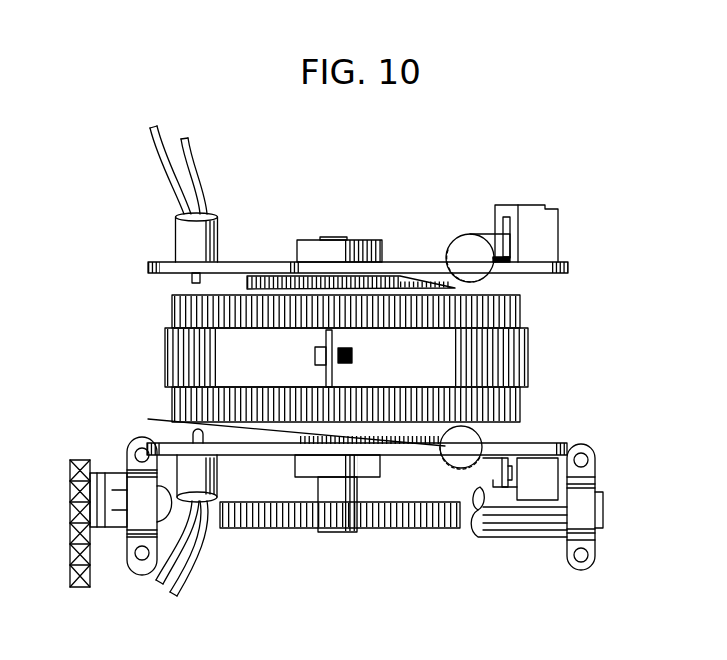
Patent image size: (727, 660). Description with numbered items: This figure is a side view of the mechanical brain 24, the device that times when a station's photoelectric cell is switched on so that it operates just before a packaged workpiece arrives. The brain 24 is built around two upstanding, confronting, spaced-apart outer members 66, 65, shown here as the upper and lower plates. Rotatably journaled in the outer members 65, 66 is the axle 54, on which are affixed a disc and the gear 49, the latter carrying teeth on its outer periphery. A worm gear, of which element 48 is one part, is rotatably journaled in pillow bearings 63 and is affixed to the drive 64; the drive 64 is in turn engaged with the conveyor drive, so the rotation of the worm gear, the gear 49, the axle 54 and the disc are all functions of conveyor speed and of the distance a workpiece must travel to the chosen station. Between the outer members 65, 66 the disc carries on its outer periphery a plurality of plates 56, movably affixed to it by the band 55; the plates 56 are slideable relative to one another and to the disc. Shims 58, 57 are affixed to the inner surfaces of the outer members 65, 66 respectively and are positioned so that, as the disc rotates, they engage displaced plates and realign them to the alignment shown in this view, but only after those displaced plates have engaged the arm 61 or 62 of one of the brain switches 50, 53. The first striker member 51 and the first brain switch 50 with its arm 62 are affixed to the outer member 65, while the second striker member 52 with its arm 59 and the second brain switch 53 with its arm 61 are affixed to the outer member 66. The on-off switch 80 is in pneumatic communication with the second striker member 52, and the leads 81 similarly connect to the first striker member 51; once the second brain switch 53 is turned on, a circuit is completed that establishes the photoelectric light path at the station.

The mechanical brain 24 is at (512, 153).
The worm gear element 48 is at (118, 528).
The gear 49 is at (408, 502).
The first brain switch 50 is at (553, 487).
The first striker member 51 is at (220, 488).
The second striker member 52 is at (218, 218).
The second brain switch 53 is at (550, 247).
The axle 54 is at (340, 240).
The band 55 is at (428, 375).
The plates 56 is at (520, 310).
The shim 57 is at (281, 286).
The shim 58 is at (280, 426).
The arm 59 is at (188, 284).
The arm 61 is at (484, 259).
The arm 62 is at (480, 480).
The pillow bearings 63 is at (588, 488).
The drive 64 is at (70, 556).
The outer member 65 is at (545, 444).
The outer member 66 is at (570, 270).
The on-off switch 80 is at (184, 140).
The solenoid leads 81 is at (158, 587).